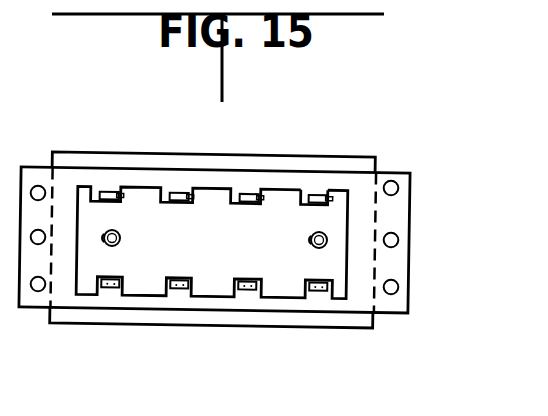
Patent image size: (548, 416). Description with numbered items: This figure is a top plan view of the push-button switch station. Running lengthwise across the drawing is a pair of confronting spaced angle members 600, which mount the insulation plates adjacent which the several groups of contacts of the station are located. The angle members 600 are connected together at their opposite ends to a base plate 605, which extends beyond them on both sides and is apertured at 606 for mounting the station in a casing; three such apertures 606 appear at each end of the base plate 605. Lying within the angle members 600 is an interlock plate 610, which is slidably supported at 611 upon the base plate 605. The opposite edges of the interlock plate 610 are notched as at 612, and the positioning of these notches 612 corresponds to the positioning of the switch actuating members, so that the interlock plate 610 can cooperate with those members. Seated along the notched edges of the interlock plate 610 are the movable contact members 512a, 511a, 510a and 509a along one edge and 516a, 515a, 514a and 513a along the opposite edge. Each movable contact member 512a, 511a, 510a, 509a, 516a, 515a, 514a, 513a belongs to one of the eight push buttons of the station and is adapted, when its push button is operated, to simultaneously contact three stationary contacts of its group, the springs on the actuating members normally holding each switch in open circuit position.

The angle members 600 is at (346, 162).
The base plate 605 is at (396, 306).
The apertures 606 is at (398, 188).
The interlock plate 610 is at (334, 213).
The slidable support 611 is at (328, 238).
The notches 612 is at (306, 197).
The movable contact member 509a is at (312, 197).
The movable contact member 510a is at (243, 196).
The movable contact member 511a is at (174, 193).
The movable contact member 512a is at (105, 193).
The movable contact member 513a is at (324, 292).
The movable contact member 514a is at (253, 291).
The movable contact member 515a is at (182, 291).
The movable contact member 516a is at (113, 291).